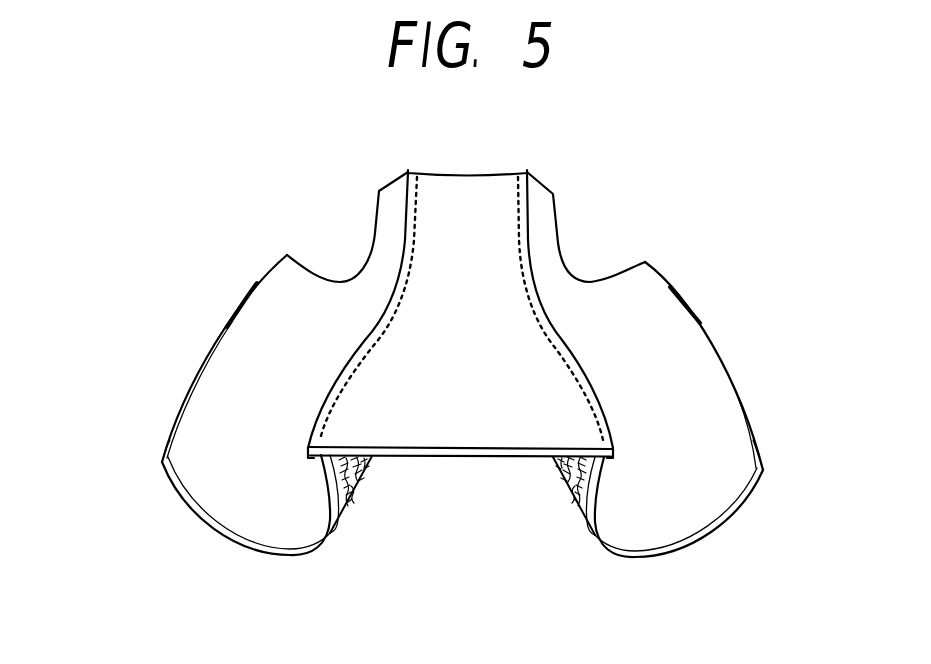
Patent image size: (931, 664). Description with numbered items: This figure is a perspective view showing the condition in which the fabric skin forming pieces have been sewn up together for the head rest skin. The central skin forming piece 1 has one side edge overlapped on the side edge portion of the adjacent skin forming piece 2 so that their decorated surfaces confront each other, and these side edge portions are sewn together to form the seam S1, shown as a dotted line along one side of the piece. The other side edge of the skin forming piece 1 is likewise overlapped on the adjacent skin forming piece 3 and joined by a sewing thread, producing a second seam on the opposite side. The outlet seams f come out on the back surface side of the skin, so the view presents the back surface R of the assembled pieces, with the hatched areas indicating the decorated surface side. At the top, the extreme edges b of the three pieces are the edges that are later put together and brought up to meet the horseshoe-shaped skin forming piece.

The skin forming piece 1 is at (454, 332).
The skin forming piece 2 is at (730, 372).
The skin forming piece 3 is at (202, 357).
The back surface of the skin R is at (213, 430).
The outlet seam f is at (367, 330).
The extreme edge b is at (395, 187).
The seam S1 is at (522, 260).